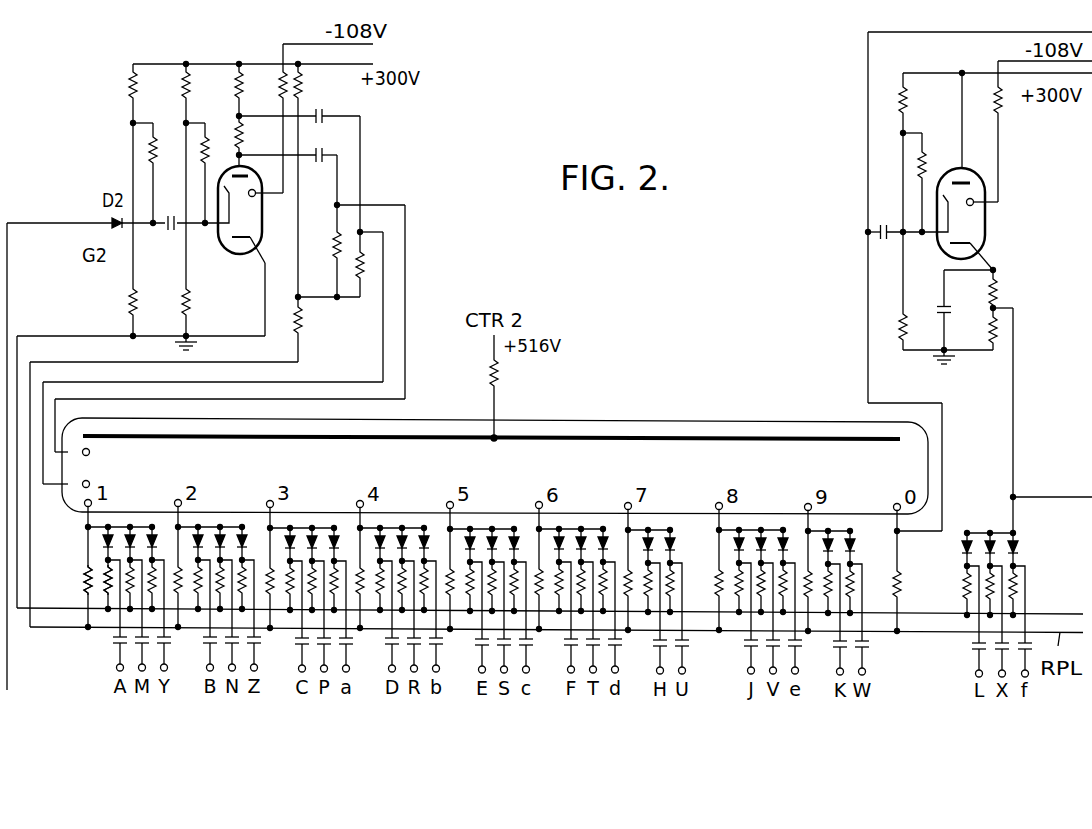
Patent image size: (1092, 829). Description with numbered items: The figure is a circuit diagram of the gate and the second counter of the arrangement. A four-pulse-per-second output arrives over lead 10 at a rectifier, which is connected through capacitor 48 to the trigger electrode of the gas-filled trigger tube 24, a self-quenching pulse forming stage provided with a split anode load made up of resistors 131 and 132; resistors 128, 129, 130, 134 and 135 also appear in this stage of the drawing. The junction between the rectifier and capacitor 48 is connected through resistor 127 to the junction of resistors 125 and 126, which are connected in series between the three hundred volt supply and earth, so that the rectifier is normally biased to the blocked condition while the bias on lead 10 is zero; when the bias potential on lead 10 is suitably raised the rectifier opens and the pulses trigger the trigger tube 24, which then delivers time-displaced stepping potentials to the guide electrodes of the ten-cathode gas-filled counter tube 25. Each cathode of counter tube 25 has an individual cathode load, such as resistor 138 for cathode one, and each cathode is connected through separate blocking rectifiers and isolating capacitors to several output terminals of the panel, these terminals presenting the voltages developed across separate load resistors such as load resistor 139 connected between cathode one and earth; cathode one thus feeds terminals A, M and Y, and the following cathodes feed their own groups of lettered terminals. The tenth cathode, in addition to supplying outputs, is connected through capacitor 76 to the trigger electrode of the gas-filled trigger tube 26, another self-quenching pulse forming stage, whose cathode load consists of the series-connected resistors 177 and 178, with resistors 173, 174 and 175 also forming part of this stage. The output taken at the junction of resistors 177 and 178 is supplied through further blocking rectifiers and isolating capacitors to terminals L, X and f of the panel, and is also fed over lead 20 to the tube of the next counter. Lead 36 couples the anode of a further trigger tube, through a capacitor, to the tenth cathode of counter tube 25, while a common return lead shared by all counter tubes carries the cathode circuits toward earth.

The lead 10 is at (7, 663).
The lead 20 is at (1017, 494).
The lead 36 is at (993, 34).
The gas-filled trigger tube 24 is at (254, 210).
The ten-cathode gas-filled counter tube 25 is at (495, 466).
The gas-filled trigger tube 26 is at (984, 166).
The capacitor 48 is at (168, 245).
The capacitor 76 is at (878, 244).
The resistor 125 is at (114, 93).
The resistor 126 is at (117, 229).
The resistor 127 is at (159, 173).
The resistor R128 128 is at (203, 93).
The resistor R129 129 is at (201, 311).
The resistor R130 130 is at (213, 173).
The resistor 131 is at (254, 91).
The resistor 132 is at (255, 140).
The resistor R134 134 is at (322, 180).
The resistor R135 135 is at (318, 329).
The resistor 138 is at (88, 585).
The load resistor 139 is at (108, 602).
The resistor R173 173 is at (925, 103).
The resistor R174 174 is at (915, 319).
The resistor R175 175 is at (929, 179).
The resistor 177 is at (1018, 292).
The resistor 178 is at (978, 326).